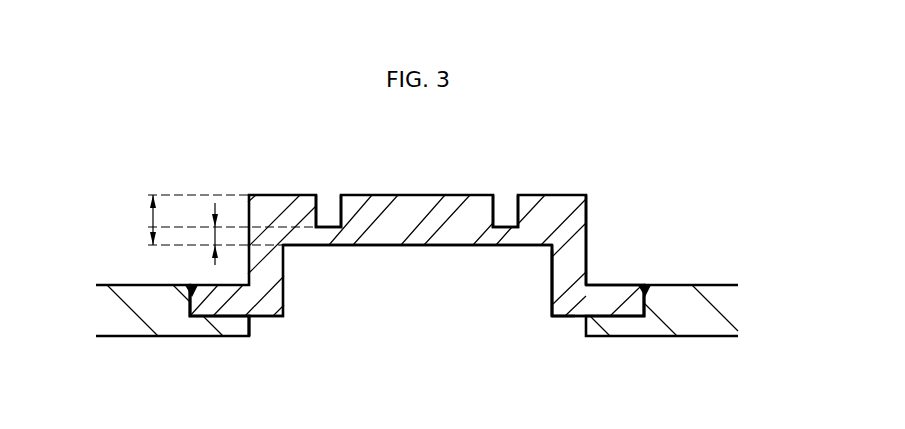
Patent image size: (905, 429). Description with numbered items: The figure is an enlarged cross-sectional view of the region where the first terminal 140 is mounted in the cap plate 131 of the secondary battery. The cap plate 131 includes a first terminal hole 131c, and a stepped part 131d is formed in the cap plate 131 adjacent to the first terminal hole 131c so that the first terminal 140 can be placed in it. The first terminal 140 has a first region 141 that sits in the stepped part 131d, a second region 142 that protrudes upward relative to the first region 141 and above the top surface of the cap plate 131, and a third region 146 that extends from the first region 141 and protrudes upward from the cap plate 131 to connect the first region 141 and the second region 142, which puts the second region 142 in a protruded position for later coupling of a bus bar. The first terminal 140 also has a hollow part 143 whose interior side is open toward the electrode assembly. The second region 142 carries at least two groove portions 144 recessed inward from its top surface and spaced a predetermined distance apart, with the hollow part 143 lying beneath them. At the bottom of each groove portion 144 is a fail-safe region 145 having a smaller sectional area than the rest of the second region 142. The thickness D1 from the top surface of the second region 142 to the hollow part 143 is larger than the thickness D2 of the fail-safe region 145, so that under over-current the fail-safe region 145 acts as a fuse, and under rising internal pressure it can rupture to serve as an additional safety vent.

The cap plate 131 is at (712, 295).
The first terminal hole 131c is at (250, 325).
The stepped part 131d is at (222, 318).
The first terminal 140 is at (239, 177).
The first region 141 is at (619, 295).
The second region 142 is at (558, 210).
The hollow part 143 is at (431, 294).
The groove portion 144 is at (332, 205).
The fail-safe region 145 is at (505, 226).
The third region 146 is at (552, 290).
The thickness D1 is at (200, 220).
The thickness of the fail-safe region D2 is at (232, 234).